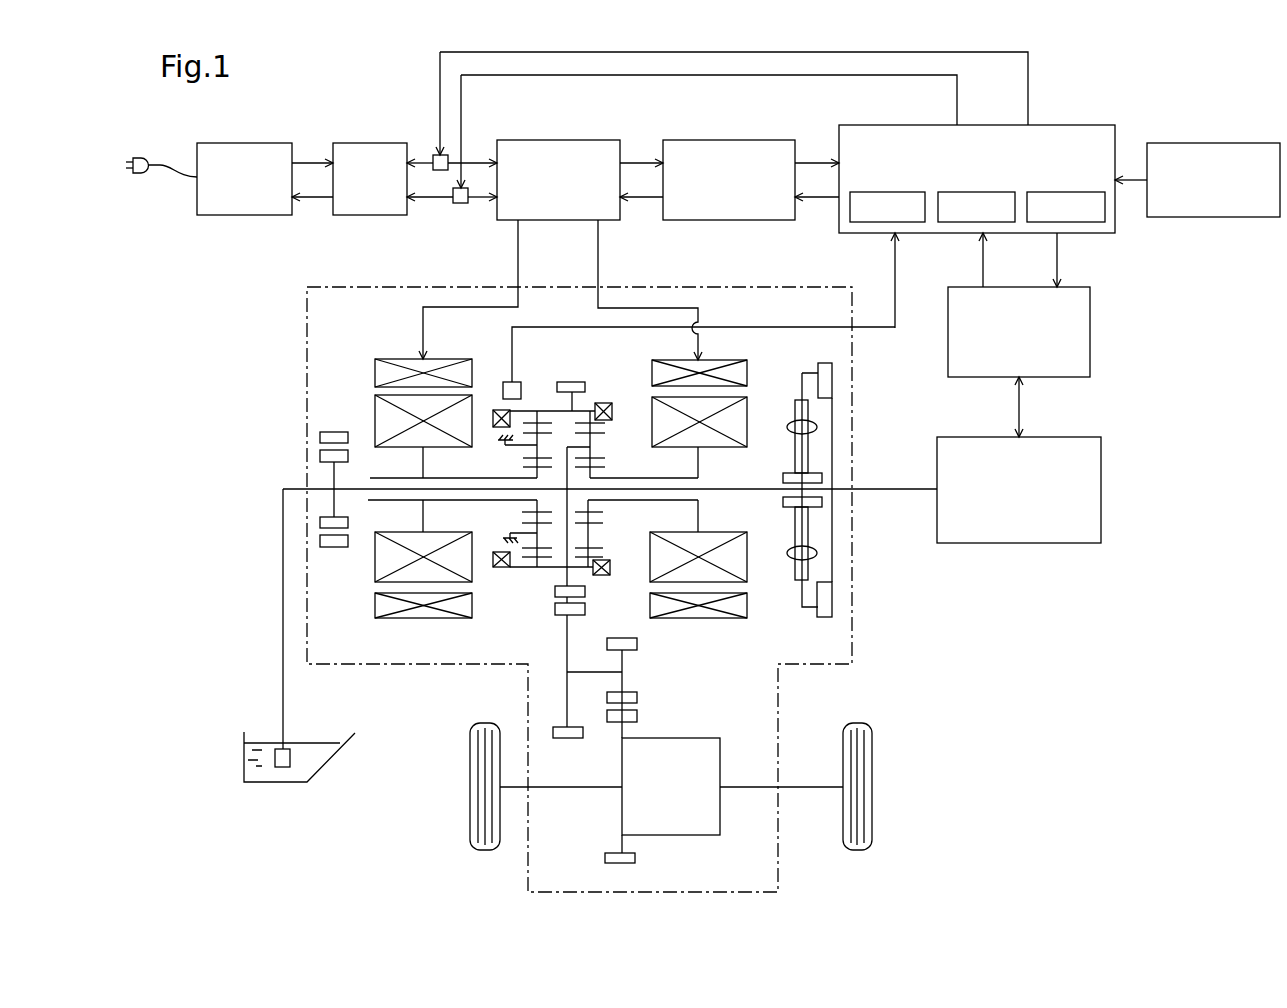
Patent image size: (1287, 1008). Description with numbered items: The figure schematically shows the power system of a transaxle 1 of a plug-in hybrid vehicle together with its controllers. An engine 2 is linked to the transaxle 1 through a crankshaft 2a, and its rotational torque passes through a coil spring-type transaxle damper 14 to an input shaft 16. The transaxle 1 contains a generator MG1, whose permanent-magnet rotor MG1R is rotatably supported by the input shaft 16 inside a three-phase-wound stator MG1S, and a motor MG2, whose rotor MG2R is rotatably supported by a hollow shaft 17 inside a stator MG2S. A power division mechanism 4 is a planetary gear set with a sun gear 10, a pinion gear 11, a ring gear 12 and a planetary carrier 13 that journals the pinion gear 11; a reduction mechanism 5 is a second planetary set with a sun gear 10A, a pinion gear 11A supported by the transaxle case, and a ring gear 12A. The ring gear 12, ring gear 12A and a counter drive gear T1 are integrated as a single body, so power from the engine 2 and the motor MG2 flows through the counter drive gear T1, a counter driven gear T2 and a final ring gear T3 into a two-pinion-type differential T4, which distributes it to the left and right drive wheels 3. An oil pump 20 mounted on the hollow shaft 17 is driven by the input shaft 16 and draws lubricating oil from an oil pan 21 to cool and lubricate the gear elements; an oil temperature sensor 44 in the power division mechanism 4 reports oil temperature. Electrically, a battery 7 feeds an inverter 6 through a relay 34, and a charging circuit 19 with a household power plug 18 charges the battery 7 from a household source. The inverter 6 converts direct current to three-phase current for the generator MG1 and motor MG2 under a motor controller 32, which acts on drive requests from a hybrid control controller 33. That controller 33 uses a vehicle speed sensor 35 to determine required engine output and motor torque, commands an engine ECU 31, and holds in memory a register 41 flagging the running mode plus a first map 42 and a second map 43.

The transaxle 1 is at (724, 288).
The engine 2 is at (1101, 490).
The crankshaft 2a is at (885, 489).
The drive wheels 3 is at (470, 752).
The power division mechanism 4 is at (614, 405).
The reduction mechanism 5 is at (529, 405).
The inverter 6 is at (573, 140).
The battery 7 is at (361, 143).
The sun gear 10 is at (605, 462).
The sun gear 10A is at (523, 467).
The pinion gear 11 is at (605, 435).
The pinion gear 11A is at (522, 525).
The ring gear 12 is at (595, 408).
The ring gear 12A is at (548, 408).
The planetary carrier 13 is at (567, 553).
The transaxle damper 14 is at (834, 600).
The input shaft 16 is at (735, 489).
The hollow shaft 17 is at (348, 522).
The household power plug 18 is at (163, 160).
The charging circuit 19 is at (255, 143).
The oil pump 20 is at (320, 437).
The oil pan 21 is at (277, 770).
The engine electronic control unit 31 is at (1090, 330).
The motor controller 32 is at (728, 140).
The hybrid control controller 33 is at (978, 195).
The relay 34 is at (433, 156).
The vehicle speed sensor 35 is at (1183, 143).
The register 41 is at (1085, 222).
The first map 42 is at (905, 233).
The second map 43 is at (992, 233).
The oil temperature sensor 44 is at (503, 388).
The counter drive gear T1 is at (598, 575).
The counter driven gear T2 is at (567, 640).
The final ring gear T3 is at (637, 652).
The differential T4 is at (680, 835).
The motor/generator MG1 is at (922, 370).
The stator MG1S is at (747, 363).
The rotor MG1R is at (747, 425).
The motor/generator MG2 is at (230, 333).
The stator MG2S is at (375, 365).
The rotor MG2R is at (375, 405).